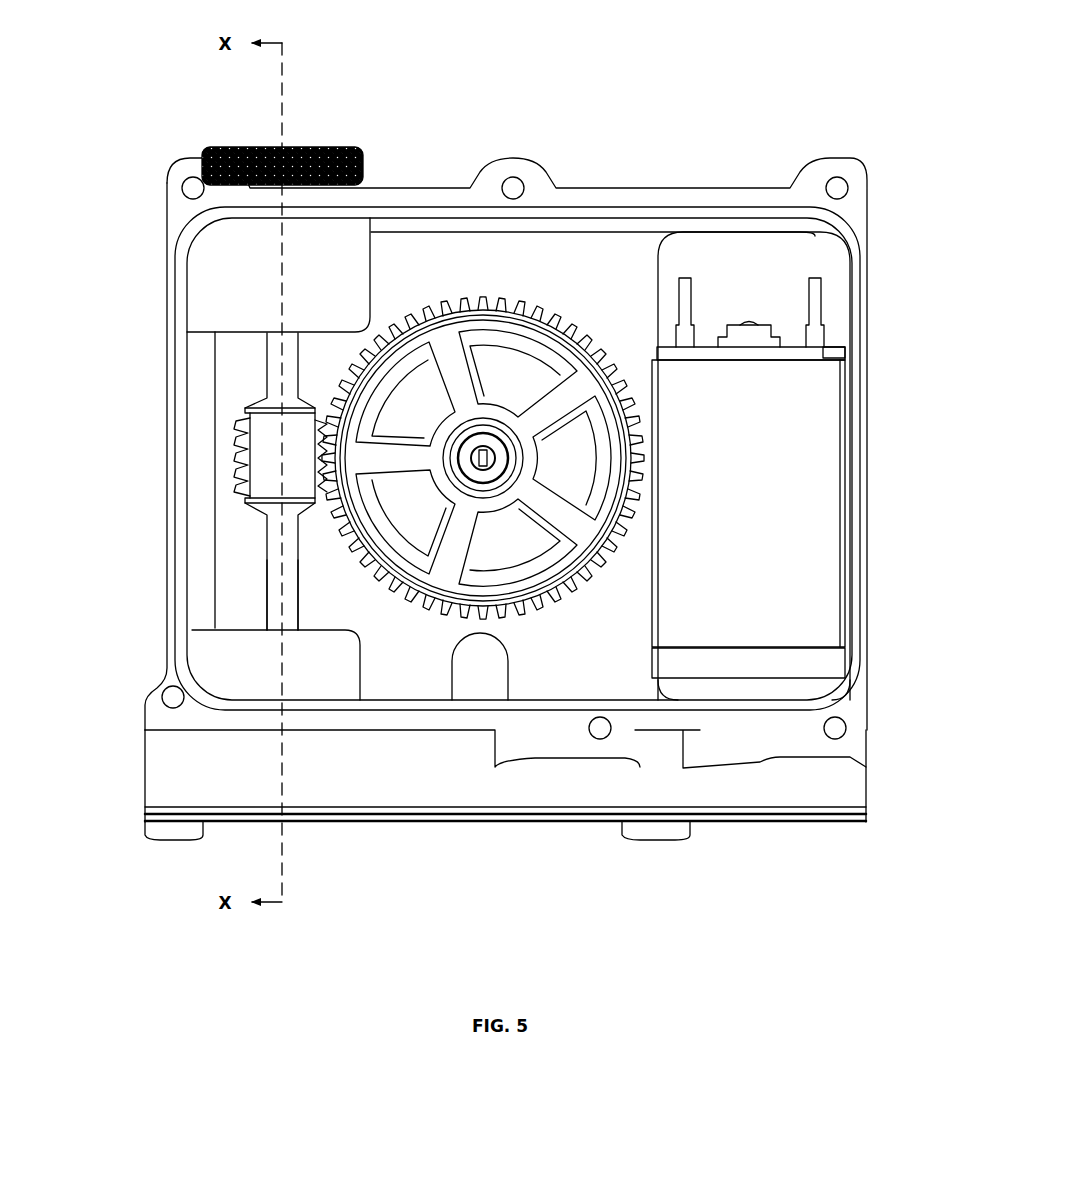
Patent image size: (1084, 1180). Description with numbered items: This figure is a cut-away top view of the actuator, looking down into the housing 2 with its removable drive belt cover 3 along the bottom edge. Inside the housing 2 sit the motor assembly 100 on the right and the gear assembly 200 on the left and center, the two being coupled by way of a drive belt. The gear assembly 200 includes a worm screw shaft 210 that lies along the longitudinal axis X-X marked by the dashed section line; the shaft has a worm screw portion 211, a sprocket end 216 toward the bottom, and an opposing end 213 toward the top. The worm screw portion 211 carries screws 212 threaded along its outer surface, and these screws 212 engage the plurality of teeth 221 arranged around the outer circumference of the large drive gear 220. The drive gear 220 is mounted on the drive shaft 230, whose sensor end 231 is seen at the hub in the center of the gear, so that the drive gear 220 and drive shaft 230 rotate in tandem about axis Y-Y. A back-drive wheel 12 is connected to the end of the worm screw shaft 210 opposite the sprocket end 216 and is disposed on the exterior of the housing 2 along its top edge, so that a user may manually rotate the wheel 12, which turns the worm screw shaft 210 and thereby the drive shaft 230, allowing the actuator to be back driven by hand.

The housing 2 is at (846, 219).
The drive belt cover 3 is at (773, 822).
The back-drive wheel 12 is at (328, 148).
The motor assembly 100 is at (775, 553).
The gear assembly 200 is at (148, 435).
The worm screw shaft 210 is at (280, 553).
The worm screw portion 211 is at (270, 468).
The screws 212 is at (242, 488).
The opposing end 213 is at (277, 353).
The sprocket end 216 is at (275, 602).
The drive gear 220 is at (570, 342).
The teeth 221 is at (642, 448).
The drive shaft 230 is at (467, 453).
The sensor end 231 is at (483, 458).